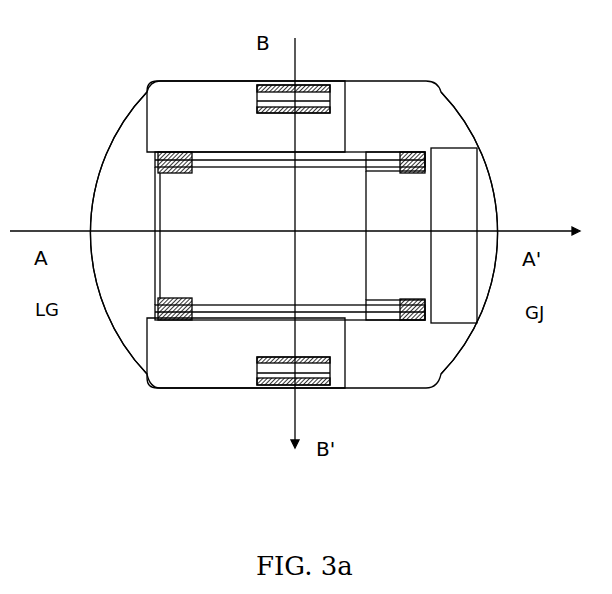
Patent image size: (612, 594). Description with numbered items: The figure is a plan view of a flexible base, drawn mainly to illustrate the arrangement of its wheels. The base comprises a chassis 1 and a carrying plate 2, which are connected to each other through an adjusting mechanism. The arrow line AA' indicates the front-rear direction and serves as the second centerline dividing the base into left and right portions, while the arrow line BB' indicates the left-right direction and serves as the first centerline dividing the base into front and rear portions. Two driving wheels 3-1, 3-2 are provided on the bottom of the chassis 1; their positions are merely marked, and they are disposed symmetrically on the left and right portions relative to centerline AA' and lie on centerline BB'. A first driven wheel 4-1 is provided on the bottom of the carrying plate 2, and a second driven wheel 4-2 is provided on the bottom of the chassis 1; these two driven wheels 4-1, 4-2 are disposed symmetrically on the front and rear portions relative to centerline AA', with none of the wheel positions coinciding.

The chassis 1 is at (385, 120).
The carrying plate 2 is at (352, 195).
The driving wheel 3-1 is at (357, 40).
The driving wheel 3-2 is at (280, 390).
The first driven wheel 4-1 is at (133, 297).
The second driven wheel 4-2 is at (458, 298).